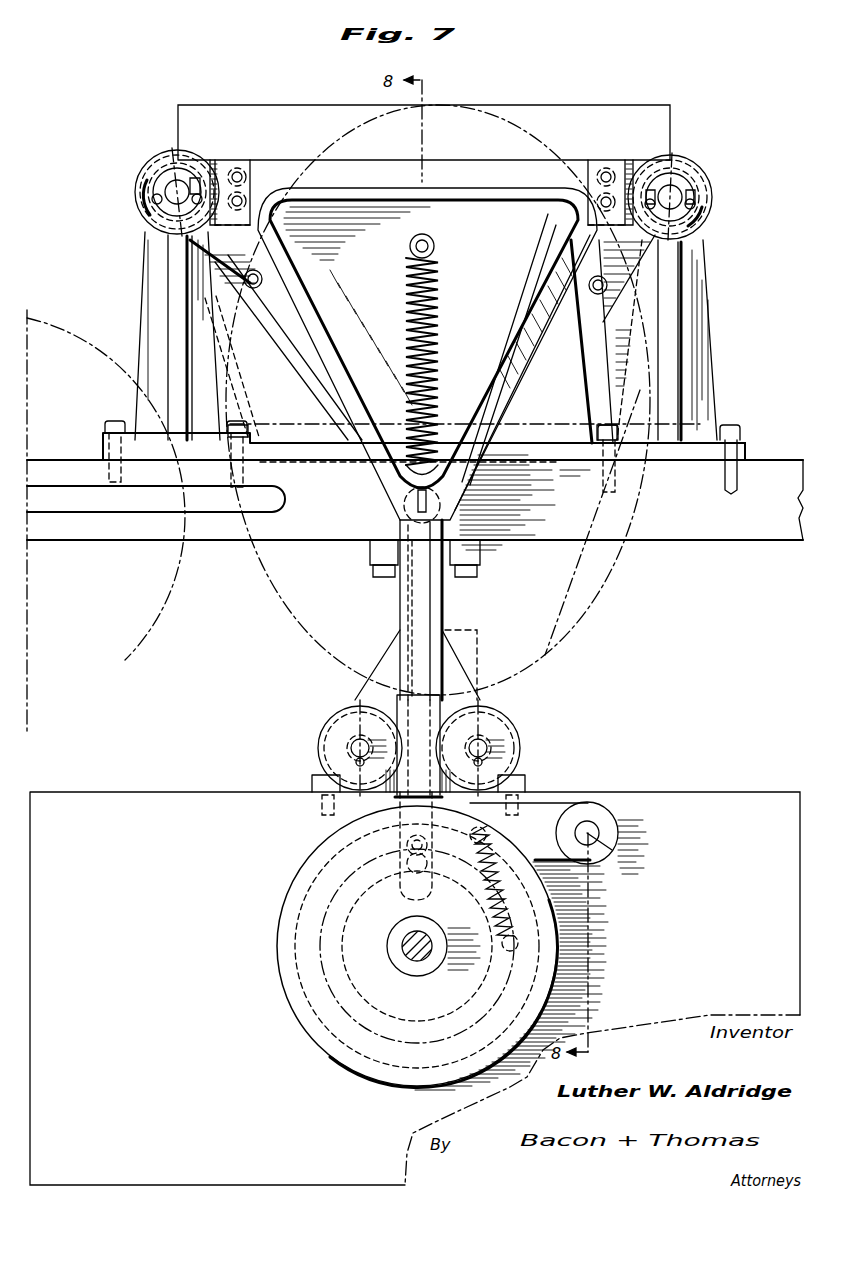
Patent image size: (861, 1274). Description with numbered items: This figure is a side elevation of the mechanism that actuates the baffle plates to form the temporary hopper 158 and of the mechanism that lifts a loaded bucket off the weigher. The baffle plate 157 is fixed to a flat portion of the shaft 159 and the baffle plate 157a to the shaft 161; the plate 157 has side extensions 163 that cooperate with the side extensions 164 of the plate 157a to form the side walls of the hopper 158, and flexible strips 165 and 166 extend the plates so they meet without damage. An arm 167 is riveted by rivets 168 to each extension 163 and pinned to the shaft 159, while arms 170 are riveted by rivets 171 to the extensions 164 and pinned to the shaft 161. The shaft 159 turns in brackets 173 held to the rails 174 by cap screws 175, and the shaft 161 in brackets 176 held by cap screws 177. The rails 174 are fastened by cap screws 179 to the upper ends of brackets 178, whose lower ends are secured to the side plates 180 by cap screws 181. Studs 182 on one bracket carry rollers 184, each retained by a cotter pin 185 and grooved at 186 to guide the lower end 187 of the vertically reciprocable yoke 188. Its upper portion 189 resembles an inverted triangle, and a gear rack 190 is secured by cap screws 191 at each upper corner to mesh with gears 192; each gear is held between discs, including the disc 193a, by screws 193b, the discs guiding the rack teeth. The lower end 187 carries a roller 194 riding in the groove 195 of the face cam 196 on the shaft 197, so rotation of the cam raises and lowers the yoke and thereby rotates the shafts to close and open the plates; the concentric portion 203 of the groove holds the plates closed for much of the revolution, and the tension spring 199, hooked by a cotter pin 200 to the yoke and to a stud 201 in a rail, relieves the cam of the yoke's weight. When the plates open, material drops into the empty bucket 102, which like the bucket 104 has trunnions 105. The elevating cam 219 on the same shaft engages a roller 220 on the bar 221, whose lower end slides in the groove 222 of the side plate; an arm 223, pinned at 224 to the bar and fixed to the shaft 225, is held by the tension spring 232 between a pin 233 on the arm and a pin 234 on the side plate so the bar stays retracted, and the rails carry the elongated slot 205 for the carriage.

The weighing bucket 102 is at (570, 597).
The bucket 104 is at (135, 635).
The trunnions 105 is at (462, 505).
The baffle plate 157 is at (612, 334).
The baffle plate 157a is at (228, 335).
The temporary hopper 158 is at (555, 112).
The shaft 159 is at (684, 216).
The shaft 161 is at (165, 212).
The side extensions 163 is at (560, 447).
The side extensions 164 is at (308, 443).
The flexible strip 165 is at (597, 432).
The flexible strip 166 is at (250, 438).
The arm 167 is at (607, 285).
The rivets 168 is at (626, 312).
The arms 170 is at (246, 283).
The rivets 171 is at (253, 288).
The brackets 173 is at (705, 322).
The rails 174 is at (776, 543).
The cap screws 175 is at (606, 425).
The brackets 176 is at (142, 335).
The cap screws 177 is at (114, 423).
The brackets 178 is at (445, 603).
The cap screws 179 is at (372, 571).
The side plates 180 is at (676, 792).
The cap screws 181 is at (318, 766).
The studs 182 is at (474, 764).
The roller 184 is at (320, 724).
The cotter pin 185 is at (360, 738).
The groove 186 is at (322, 742).
The lower end of yoke 187 is at (448, 692).
The yoke 188 is at (396, 614).
The upper portion of yoke 189 is at (540, 355).
The gear rack 190 is at (232, 160).
The cap screws 191 is at (245, 168).
The gears 192 is at (142, 194).
The disc 193a is at (728, 182).
The screws 193b is at (193, 178).
The roller 194 is at (407, 843).
The groove 195 is at (497, 988).
The baffle-operating face cam 196 is at (372, 1075).
The shaft 197 is at (430, 960).
The tension spring 199 is at (438, 326).
The cotter pin 200 is at (428, 500).
The stud 201 is at (434, 243).
The concentric portion 203 is at (300, 920).
The elongated slot 205 is at (92, 490).
The elevating cam 219 is at (400, 1015).
The roller 220 is at (408, 866).
The vertically movable bar 221 is at (405, 650).
The groove 222 is at (468, 835).
The arm 223 is at (618, 818).
The pin 224 is at (403, 810).
The shaft 225 is at (614, 850).
The tension spring 232 is at (503, 882).
The pin 233 is at (558, 824).
The pin 234 is at (516, 946).